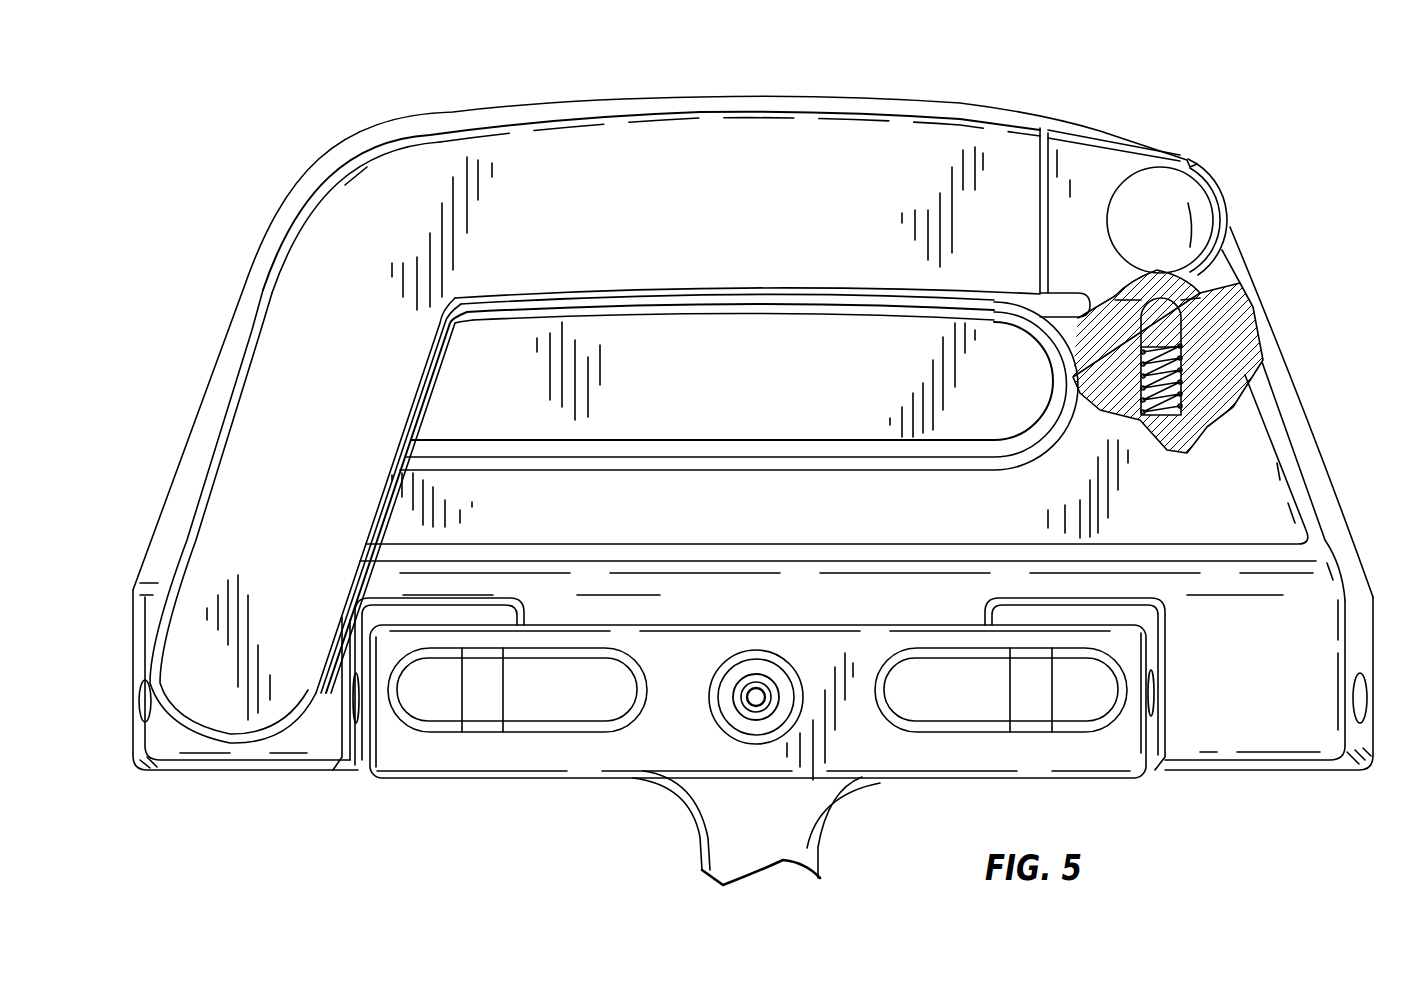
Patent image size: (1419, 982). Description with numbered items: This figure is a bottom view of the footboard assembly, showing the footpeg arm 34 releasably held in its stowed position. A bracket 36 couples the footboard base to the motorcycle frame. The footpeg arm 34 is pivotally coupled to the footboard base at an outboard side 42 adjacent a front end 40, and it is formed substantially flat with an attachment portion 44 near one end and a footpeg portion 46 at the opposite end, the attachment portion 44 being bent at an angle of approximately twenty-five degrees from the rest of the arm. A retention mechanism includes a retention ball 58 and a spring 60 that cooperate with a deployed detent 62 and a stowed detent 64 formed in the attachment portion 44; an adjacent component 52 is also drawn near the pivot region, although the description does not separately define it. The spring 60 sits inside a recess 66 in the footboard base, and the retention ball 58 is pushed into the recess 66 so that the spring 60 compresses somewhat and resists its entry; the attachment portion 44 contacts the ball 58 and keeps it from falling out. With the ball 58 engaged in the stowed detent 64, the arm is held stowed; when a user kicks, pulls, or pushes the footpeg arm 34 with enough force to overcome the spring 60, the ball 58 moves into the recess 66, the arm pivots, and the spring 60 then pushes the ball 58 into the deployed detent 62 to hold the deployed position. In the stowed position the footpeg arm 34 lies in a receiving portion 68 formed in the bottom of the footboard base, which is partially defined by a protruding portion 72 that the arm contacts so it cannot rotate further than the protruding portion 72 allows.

The footpeg arm 34 is at (626, 165).
The bracket 36 is at (713, 783).
The front end 40 is at (1353, 525).
The outboard side 42 is at (568, 100).
The attachment portion 44 is at (1080, 163).
The footpeg portion 46 is at (265, 433).
The ball 52 is at (1186, 208).
The retention ball 58 is at (1247, 337).
The spring 60 is at (1180, 402).
The deployed detent 62 is at (1189, 158).
The stowed detent 64 is at (1200, 281).
The recess 66 is at (1160, 396).
The receiving portion 68 is at (441, 134).
The protruding portion 72 is at (727, 294).